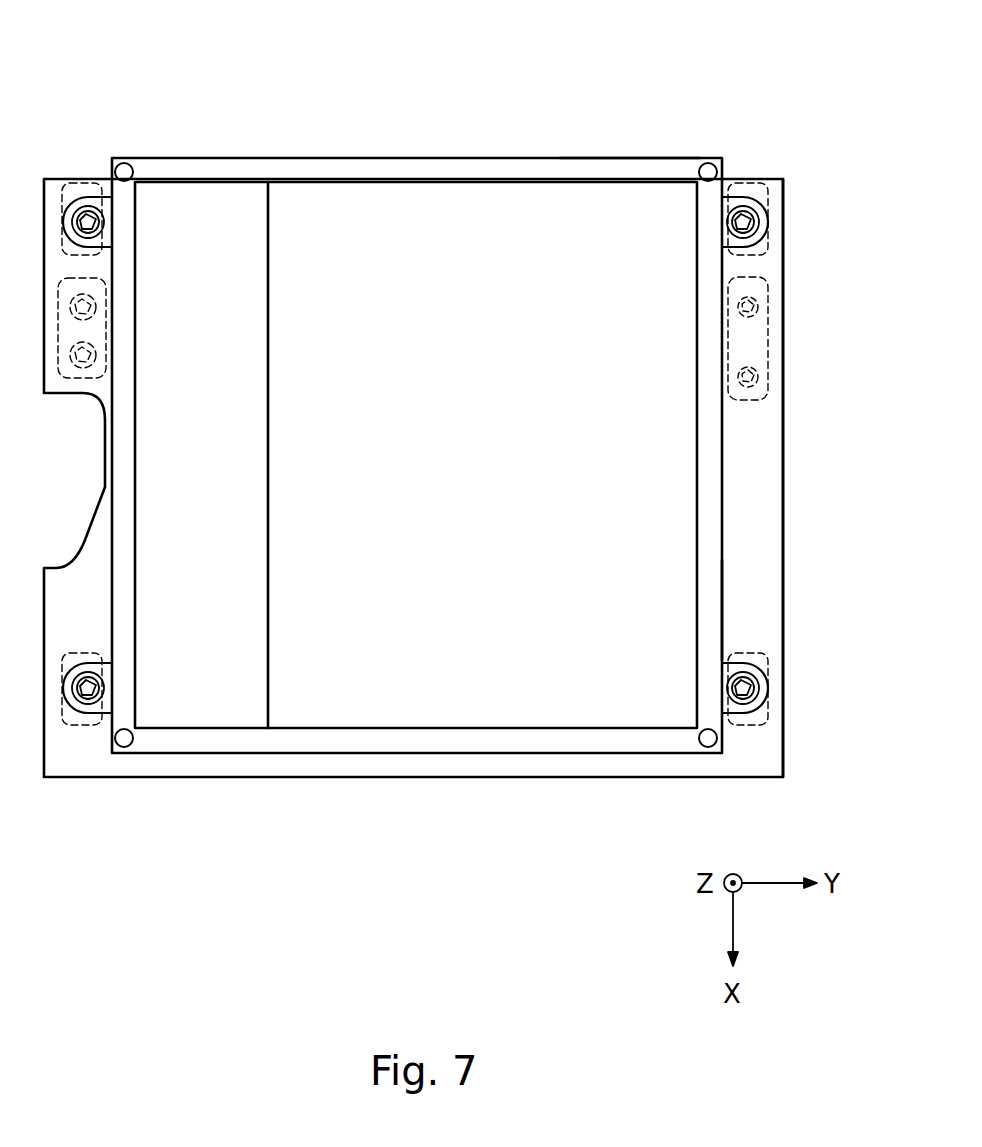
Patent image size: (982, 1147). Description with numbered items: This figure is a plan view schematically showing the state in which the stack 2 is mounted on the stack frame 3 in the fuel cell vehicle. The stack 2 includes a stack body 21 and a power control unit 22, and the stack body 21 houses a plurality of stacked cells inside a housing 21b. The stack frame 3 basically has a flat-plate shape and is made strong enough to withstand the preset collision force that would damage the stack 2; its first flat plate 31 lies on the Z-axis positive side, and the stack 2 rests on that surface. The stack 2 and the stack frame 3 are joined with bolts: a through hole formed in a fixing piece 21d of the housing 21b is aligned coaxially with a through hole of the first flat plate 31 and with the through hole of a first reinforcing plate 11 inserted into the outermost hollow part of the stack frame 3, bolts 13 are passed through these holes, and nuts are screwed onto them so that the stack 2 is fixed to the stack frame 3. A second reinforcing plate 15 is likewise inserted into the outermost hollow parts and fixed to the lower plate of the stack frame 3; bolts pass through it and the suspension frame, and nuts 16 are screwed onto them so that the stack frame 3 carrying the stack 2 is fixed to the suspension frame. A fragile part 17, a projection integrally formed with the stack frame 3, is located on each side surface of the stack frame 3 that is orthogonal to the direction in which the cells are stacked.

The stack 2 is at (417, 376).
The stack body 21 is at (521, 153).
The power control unit 22 is at (479, 248).
The housing 21b is at (632, 168).
The stack frame 3 is at (808, 540).
The fragile part 17 is at (783, 473).
The first flat plate 31 is at (772, 602).
The bolt 13 is at (760, 670).
The fixing piece 21d is at (768, 687).
The first reinforcing plate 11 is at (762, 718).
The second reinforcing plate 15 is at (762, 337).
The nut 16 is at (768, 287).